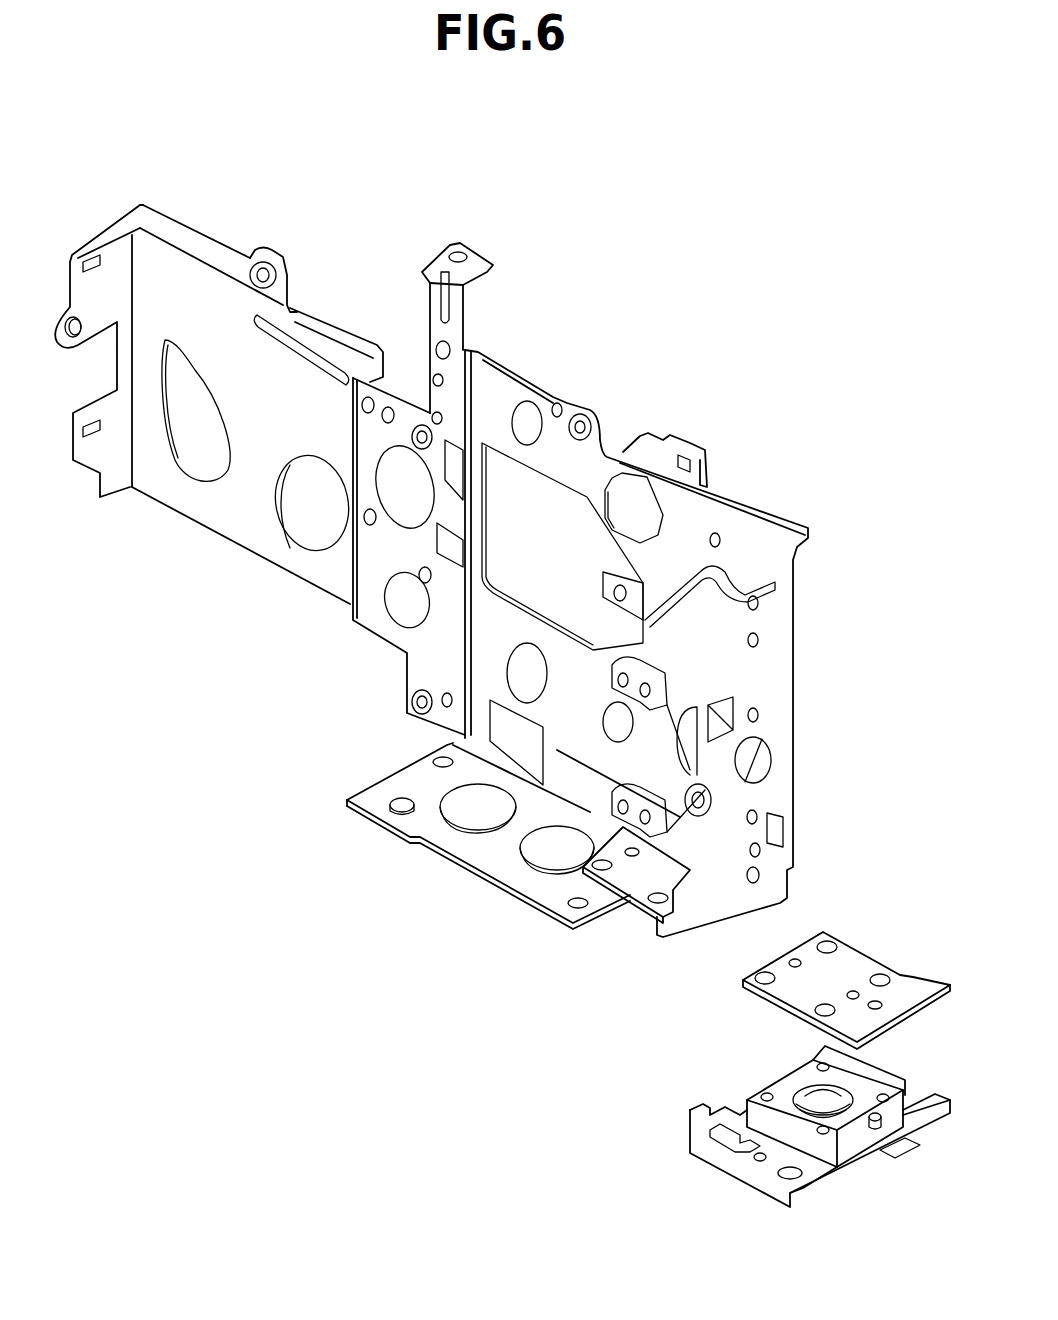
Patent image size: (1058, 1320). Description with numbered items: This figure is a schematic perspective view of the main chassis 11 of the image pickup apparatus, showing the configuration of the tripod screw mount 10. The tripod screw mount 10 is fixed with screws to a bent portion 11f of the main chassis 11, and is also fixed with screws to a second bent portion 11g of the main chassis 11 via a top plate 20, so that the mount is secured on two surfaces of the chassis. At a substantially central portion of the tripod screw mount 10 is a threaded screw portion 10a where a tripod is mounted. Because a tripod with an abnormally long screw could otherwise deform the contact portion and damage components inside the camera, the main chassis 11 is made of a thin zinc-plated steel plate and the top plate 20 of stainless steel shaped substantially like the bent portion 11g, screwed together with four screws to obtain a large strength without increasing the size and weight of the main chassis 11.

The main chassis 11 is at (740, 510).
The bent portion 11f is at (517, 875).
The bent portion 11g is at (647, 880).
The top plate 20 is at (853, 958).
The tripod screw mount 10 is at (735, 1178).
The threaded screw portion 10a is at (817, 1093).